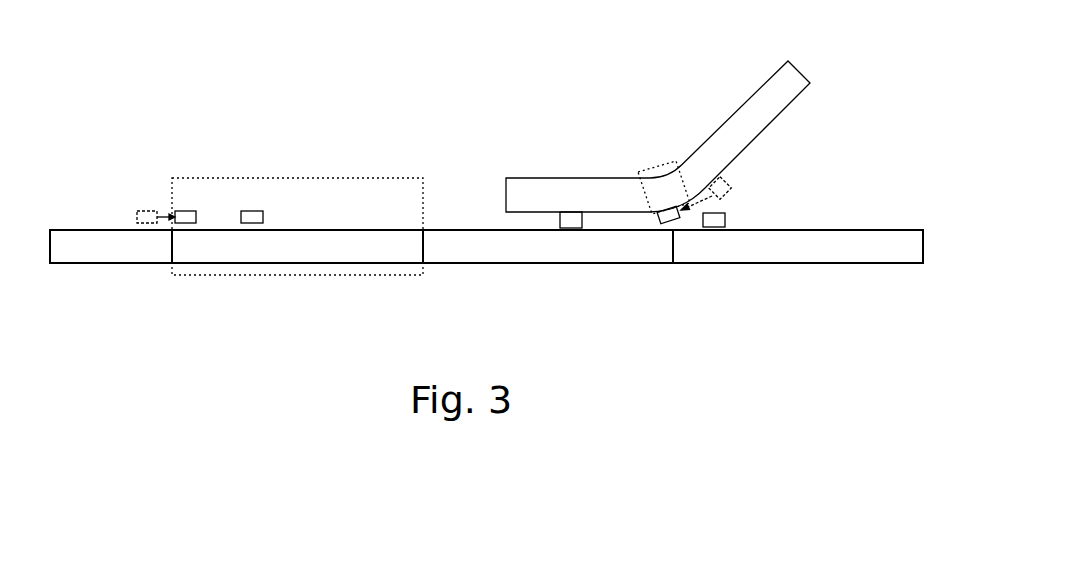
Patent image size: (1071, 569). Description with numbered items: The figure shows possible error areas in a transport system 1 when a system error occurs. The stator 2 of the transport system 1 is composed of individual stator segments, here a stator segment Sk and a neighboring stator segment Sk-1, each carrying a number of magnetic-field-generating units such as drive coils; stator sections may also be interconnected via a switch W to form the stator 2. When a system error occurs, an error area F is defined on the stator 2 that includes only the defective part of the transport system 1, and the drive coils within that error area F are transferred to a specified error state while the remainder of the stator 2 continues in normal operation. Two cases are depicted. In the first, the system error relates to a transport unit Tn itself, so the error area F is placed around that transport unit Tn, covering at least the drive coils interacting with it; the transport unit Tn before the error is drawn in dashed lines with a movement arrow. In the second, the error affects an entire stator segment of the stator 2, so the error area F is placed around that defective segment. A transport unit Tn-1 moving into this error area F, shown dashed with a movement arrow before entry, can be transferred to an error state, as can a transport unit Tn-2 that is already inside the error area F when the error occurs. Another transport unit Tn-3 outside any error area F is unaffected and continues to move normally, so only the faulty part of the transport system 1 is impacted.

The transport system 1 is at (472, 112).
The stator 2 is at (80, 212).
The stator segment Sk is at (287, 244).
The stator segment Sk-1 is at (530, 246).
The error area F is at (323, 178).
The transport unit Tn-1 is at (184, 224).
The transport unit Tn-2 is at (250, 210).
The transport unit Tn is at (667, 224).
The transport unit Tn-3 is at (710, 221).
The switch W is at (830, 143).